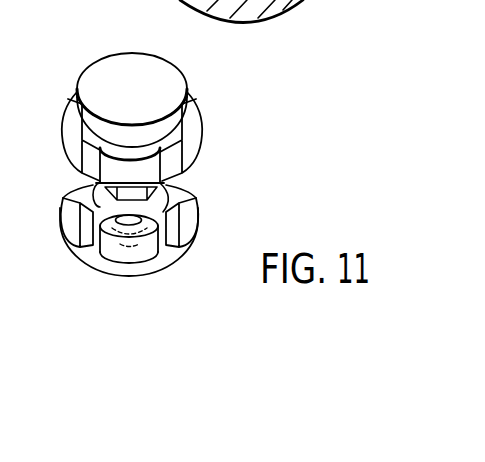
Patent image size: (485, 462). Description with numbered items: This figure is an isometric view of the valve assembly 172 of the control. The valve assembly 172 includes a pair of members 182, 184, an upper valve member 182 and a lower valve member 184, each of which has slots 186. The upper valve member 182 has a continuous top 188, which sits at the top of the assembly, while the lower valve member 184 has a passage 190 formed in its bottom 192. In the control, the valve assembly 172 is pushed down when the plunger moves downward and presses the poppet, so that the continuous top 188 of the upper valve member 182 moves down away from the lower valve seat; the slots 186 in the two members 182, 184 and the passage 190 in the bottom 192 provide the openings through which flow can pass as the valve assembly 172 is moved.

The valve assembly 172 is at (197, 117).
The upper valve member 182 is at (201, 140).
The lower valve member 184 is at (199, 222).
The slots 186 is at (163, 208).
The continuous top 188 is at (132, 77).
The passage 190 is at (90, 193).
The bottom 192 is at (150, 275).